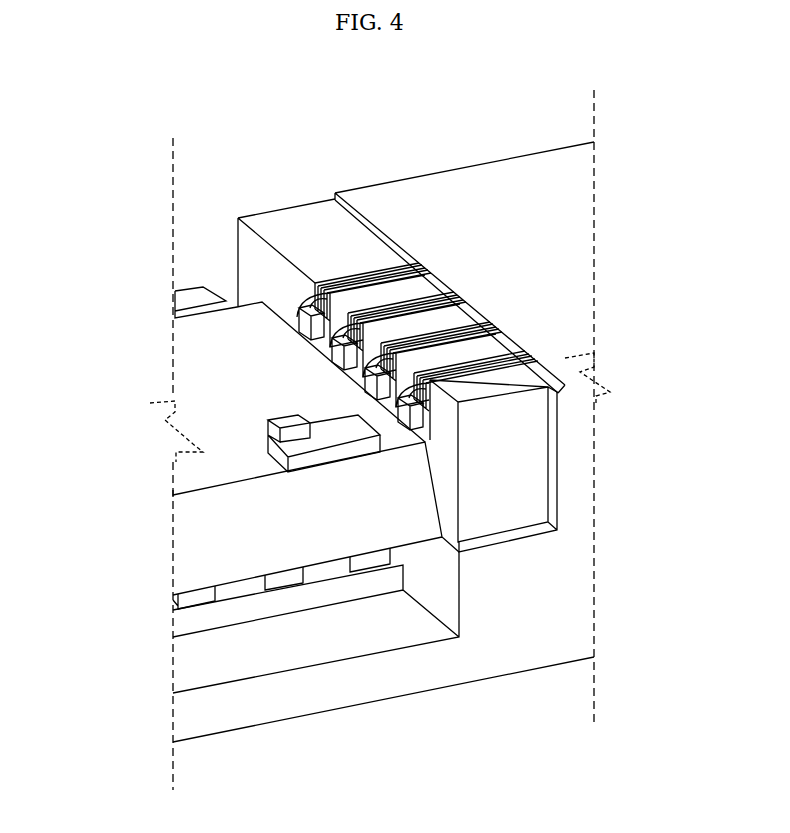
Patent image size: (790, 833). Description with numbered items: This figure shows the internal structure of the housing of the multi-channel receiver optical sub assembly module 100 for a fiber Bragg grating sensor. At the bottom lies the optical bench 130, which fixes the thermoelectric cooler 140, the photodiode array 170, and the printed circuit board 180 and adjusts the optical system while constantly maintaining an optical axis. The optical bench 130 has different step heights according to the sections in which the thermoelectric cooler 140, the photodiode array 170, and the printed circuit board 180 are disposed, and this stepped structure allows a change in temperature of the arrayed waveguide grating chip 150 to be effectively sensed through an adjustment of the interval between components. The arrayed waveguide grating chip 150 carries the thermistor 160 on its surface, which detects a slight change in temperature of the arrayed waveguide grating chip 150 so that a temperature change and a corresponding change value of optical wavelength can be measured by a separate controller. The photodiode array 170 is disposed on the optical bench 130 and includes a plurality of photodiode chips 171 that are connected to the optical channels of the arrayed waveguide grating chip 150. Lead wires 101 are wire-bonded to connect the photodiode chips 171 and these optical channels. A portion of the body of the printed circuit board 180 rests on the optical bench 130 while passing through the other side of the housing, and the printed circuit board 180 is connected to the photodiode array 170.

The multi-channel receiver optical sub assembly module 100 is at (138, 273).
The lead wires 101 is at (367, 272).
The optical bench 130 is at (567, 585).
The thermoelectric cooler 140 is at (291, 606).
The arrayed waveguide grating chip 150 is at (207, 490).
The thermistor 160 is at (283, 413).
The photodiode array 170 is at (524, 480).
The photodiode chips 171 is at (312, 283).
The printed circuit board 180 is at (540, 216).